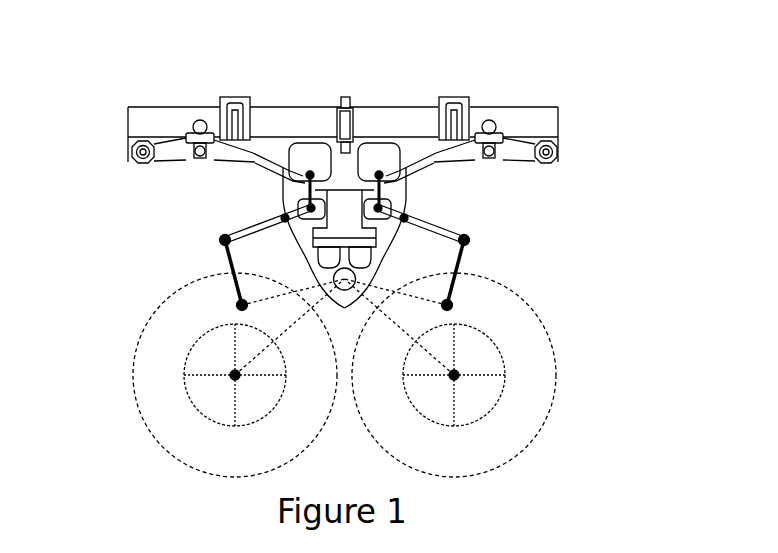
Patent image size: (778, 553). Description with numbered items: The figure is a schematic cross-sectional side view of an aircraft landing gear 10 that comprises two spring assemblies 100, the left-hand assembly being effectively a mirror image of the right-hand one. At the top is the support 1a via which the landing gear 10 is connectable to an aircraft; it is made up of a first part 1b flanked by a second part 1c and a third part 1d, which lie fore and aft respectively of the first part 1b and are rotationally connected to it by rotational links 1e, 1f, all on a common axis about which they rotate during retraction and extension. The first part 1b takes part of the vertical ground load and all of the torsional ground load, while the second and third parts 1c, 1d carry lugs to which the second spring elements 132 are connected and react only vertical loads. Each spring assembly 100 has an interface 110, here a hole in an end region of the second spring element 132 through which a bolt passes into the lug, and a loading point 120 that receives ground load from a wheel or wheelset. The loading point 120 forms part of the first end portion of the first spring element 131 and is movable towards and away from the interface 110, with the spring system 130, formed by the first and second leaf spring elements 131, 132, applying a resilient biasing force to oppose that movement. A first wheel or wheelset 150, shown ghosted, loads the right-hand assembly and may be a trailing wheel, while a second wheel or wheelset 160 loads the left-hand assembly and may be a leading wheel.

The aircraft landing gear 10 is at (421, 54).
The spring assembly 100 is at (604, 154).
The support 1a is at (162, 22).
The first part of the support 1b is at (266, 100).
The second part of the support 1c is at (163, 116).
The third part of the support 1d is at (479, 106).
The rotational link 1e is at (237, 94).
The rotational link 1f is at (456, 91).
The interface 110 is at (121, 156).
The loading point 120 is at (211, 240).
The spring system 130 is at (151, 209).
The first spring element 131 is at (260, 218).
The second spring element 132 is at (253, 158).
The first wheel or wheelset 150 is at (557, 373).
The second wheel or wheelset 160 is at (132, 374).